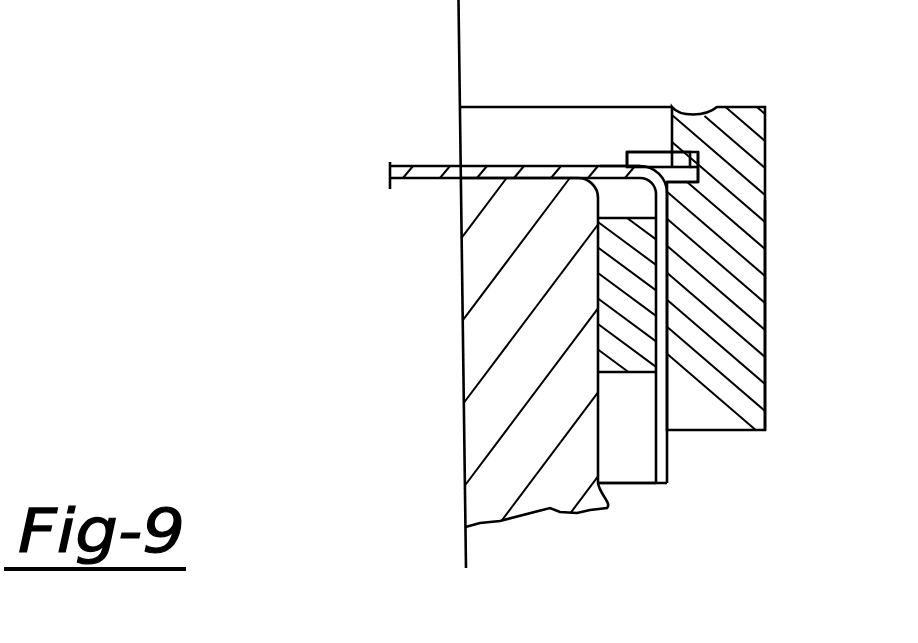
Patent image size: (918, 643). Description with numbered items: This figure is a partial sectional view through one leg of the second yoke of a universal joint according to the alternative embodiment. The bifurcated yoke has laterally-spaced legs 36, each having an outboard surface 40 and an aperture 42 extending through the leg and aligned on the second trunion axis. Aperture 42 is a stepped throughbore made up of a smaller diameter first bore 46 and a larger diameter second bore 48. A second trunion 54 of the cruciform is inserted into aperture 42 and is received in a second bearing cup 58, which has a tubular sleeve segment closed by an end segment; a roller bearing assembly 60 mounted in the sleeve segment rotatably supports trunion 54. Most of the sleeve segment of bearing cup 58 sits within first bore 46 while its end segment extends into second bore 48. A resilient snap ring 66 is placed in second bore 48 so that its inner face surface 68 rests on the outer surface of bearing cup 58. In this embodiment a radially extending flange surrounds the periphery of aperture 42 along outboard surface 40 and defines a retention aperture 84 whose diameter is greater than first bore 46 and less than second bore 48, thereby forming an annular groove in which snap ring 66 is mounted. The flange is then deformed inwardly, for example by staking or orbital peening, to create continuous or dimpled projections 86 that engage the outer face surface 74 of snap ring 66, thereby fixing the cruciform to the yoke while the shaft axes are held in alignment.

The legs 36 is at (745, 280).
The outboard surface 40 is at (740, 107).
The aperture 42 is at (477, 155).
The first bore 46 is at (648, 385).
The second bore 48 is at (766, 157).
The second trunions 54 is at (500, 340).
The second bearing cups 58 is at (658, 460).
The roller bearing assembly 60 is at (640, 290).
The snap ring 66 is at (606, 137).
The inner face surface 68 is at (766, 199).
The outer face surface 74 is at (642, 150).
The retention aperture 84 is at (670, 114).
The projections 86 is at (632, 150).